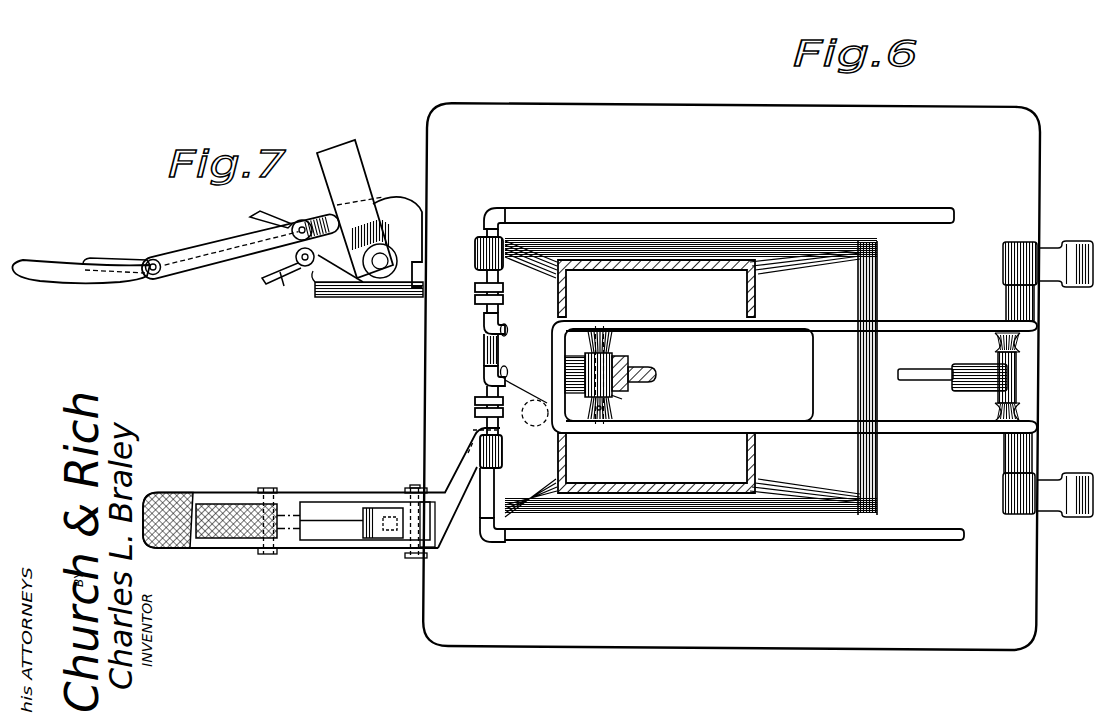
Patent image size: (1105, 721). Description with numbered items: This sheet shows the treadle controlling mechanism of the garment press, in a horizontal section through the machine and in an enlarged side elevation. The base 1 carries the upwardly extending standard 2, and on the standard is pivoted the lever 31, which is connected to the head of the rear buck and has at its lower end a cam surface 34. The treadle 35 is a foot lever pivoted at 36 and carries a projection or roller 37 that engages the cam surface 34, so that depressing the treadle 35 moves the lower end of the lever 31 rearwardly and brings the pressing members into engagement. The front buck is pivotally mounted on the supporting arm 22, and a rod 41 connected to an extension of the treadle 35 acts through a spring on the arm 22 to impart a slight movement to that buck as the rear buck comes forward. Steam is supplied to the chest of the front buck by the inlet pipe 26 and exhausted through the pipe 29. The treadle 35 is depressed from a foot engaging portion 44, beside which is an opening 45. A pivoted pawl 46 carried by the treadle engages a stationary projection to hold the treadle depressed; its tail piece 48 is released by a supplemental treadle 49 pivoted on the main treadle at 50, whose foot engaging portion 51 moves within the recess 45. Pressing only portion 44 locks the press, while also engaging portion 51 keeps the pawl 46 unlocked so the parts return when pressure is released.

In FIG. 6, the base 1 is at (731, 376).
In FIG. 6, the standard 2 is at (697, 265).
In FIG. 7, the supporting arm 22 is at (357, 209).
In FIG. 6, the inlet pipe 26 is at (508, 332).
In FIG. 6, the exhaust pipe 29 is at (508, 375).
In FIG. 6, the lever 31 is at (649, 378).
In FIG. 6, the cam surface 34 is at (626, 362).
In FIG. 6, the treadle 35 is at (717, 330).
In FIG. 7, the treadle 35 is at (402, 210).
In FIG. 6, the treadle pivot 36 is at (1017, 447).
In FIG. 6, the roller 37 is at (613, 397).
In FIG. 6, the rod 41 is at (930, 378).
In FIG. 6, the foot engaging portion 44 is at (180, 498).
In FIG. 7, the foot engaging portion 44 is at (50, 268).
In FIG. 6, the opening 45 is at (248, 490).
In FIG. 7, the pawl 46 is at (278, 276).
In FIG. 6, the tail piece 48 is at (388, 535).
In FIG. 7, the tail piece 48 is at (264, 216).
In FIG. 6, the supplemental treadle 49 is at (333, 512).
In FIG. 7, the supplemental treadle 49 is at (205, 272).
In FIG. 6, the pivot 50 is at (270, 489).
In FIG. 7, the pivot 50 is at (155, 260).
In FIG. 6, the foot engaging portion 51 is at (238, 506).
In FIG. 7, the foot engaging portion 51 is at (102, 257).